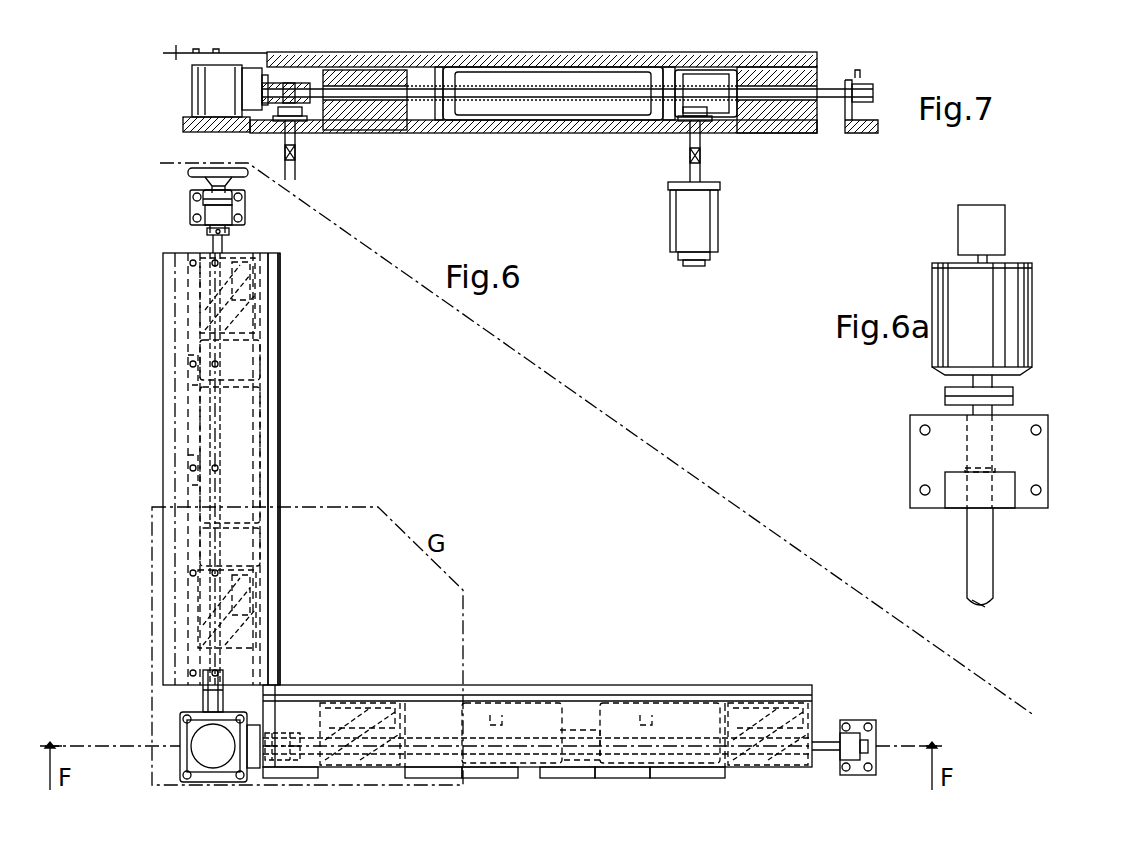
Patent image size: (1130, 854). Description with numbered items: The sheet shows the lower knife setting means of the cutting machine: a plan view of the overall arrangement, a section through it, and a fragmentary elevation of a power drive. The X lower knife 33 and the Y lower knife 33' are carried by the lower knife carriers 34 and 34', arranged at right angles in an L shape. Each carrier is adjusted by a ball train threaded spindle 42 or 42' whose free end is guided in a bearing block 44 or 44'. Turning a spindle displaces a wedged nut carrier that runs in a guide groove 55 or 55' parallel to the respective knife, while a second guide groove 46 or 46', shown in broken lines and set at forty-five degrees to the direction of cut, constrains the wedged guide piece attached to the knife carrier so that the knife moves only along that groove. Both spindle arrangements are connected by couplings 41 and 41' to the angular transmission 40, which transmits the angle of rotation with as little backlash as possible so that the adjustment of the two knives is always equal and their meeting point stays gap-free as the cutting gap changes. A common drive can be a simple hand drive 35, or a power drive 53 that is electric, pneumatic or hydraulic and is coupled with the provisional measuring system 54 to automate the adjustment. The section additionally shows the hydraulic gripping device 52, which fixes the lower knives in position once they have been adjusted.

In FIG. 6, the X lower knife 33 is at (537, 709).
In FIG. 7, the lower knife carrier 34 is at (533, 148).
In FIG. 6, the lower knife carrier 34 is at (494, 717).
In FIG. 6, the hand drive 35 is at (190, 172).
In FIG. 6, the angular transmission 40 is at (185, 727).
In FIG. 6, the coupling 41 is at (289, 737).
In FIG. 6, the ball train threaded spindle 42 is at (551, 704).
In FIG. 6, the bearing block 44 is at (861, 729).
In FIG. 6, the guide groove 46 is at (565, 709).
In FIG. 7, the hydraulic gripping device 52 is at (714, 215).
In FIG. 6A, the power drive 53 is at (1026, 318).
In FIG. 6A, the measuring system 54 is at (997, 226).
In FIG. 6, the guide groove 55 is at (530, 709).
In FIG. 6, the Y lower knife 33' is at (300, 469).
In FIG. 6, the lower knife carrier 34' is at (200, 469).
In FIG. 6, the coupling 41' is at (195, 693).
In FIG. 6, the ball train threaded spindle 42' is at (173, 469).
In FIG. 6A, the ball train threaded spindle 42' is at (1007, 557).
In FIG. 6, the bearing block 44' is at (199, 221).
In FIG. 6A, the bearing block 44' is at (1005, 461).
In FIG. 6, the guide groove 46' is at (263, 453).
In FIG. 6, the guide groove 55' is at (188, 472).